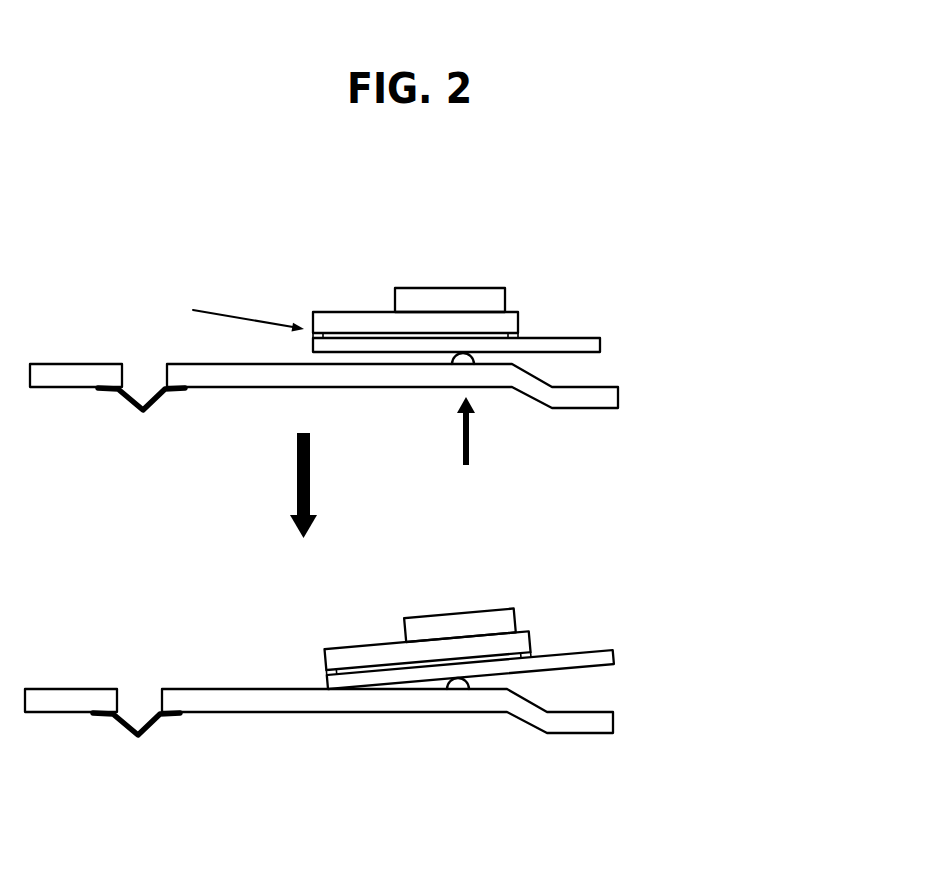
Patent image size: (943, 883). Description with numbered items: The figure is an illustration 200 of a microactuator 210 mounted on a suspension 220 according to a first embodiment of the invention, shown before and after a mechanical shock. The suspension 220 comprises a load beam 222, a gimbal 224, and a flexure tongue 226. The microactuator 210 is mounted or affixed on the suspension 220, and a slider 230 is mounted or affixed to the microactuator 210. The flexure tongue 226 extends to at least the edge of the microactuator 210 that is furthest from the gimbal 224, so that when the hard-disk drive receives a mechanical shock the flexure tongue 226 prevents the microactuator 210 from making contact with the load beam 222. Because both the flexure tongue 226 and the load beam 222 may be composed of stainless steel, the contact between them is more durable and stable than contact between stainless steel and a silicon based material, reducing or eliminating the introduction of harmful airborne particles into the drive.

The illustration 200 is at (171, 134).
The microactuator 210 is at (520, 327).
The suspension 220 is at (630, 332).
The load beam 222 is at (233, 382).
The gimbal 224 is at (450, 356).
The flexure tongue 226 is at (537, 347).
The slider 230 is at (507, 298).